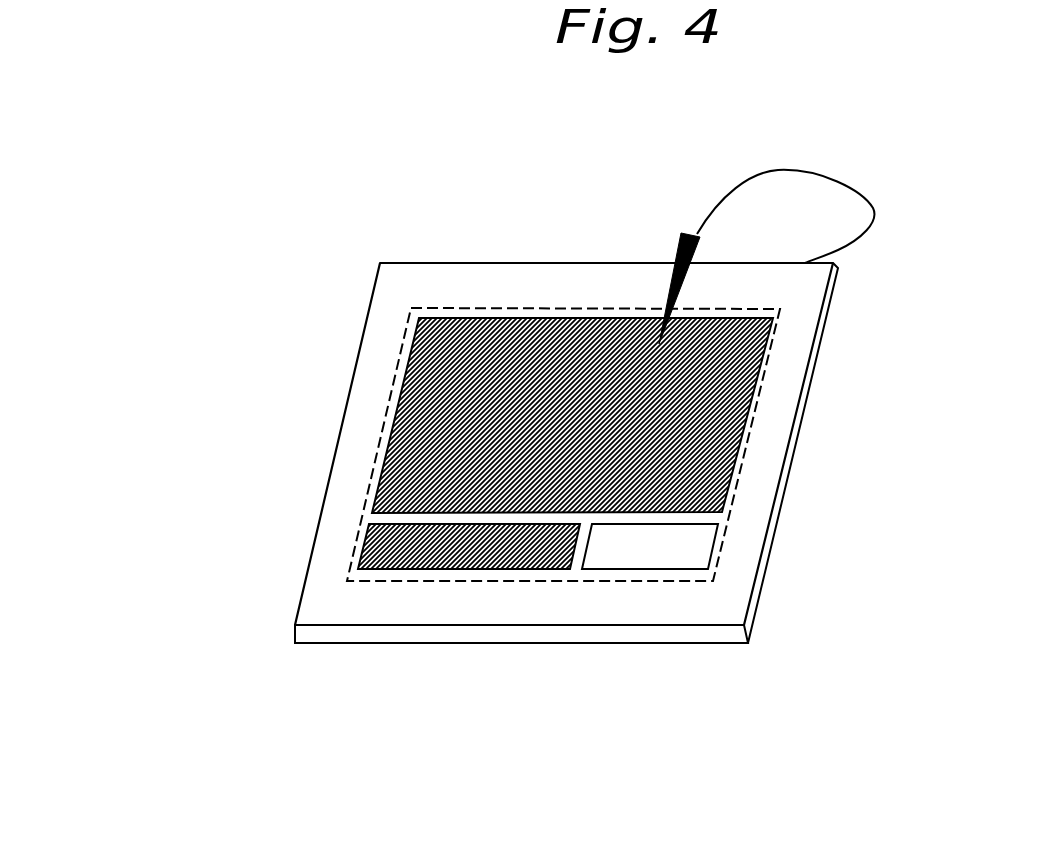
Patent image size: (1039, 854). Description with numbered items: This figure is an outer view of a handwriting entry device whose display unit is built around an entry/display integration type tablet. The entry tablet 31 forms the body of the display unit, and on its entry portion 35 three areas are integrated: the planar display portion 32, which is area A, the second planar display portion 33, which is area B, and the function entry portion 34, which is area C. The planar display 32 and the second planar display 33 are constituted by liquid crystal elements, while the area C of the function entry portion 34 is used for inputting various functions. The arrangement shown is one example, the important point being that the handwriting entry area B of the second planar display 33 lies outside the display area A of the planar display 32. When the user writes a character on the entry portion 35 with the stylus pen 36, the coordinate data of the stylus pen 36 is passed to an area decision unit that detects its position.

The entry tablet 31 is at (293, 612).
The planar display portion 32 is at (750, 363).
The second planar display portion 33 is at (353, 540).
The function entry portion 34 is at (708, 545).
The entry portion 35 is at (405, 335).
The stylus pen 36 is at (683, 242).